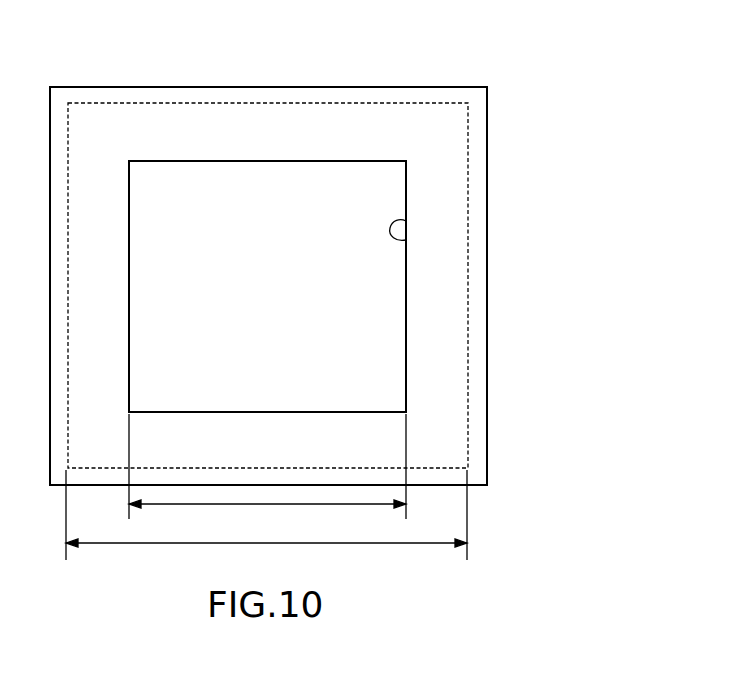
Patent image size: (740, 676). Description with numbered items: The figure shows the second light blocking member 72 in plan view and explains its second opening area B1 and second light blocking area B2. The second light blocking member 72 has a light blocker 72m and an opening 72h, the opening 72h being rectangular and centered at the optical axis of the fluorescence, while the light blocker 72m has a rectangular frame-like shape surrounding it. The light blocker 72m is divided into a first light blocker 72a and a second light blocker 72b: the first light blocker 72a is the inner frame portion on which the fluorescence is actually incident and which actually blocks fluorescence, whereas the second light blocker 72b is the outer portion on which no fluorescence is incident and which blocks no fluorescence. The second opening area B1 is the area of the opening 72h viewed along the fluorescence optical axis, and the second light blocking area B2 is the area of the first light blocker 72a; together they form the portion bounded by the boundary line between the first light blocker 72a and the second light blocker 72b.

The second light blocking member 72 is at (332, 266).
The light blocker 72m is at (332, 286).
The first light blocker 72a is at (455, 133).
The second light blocker 72b is at (478, 164).
The opening 72h is at (406, 240).
The second opening area B1 is at (267, 472).
The second light blocking area B2 is at (266, 521).